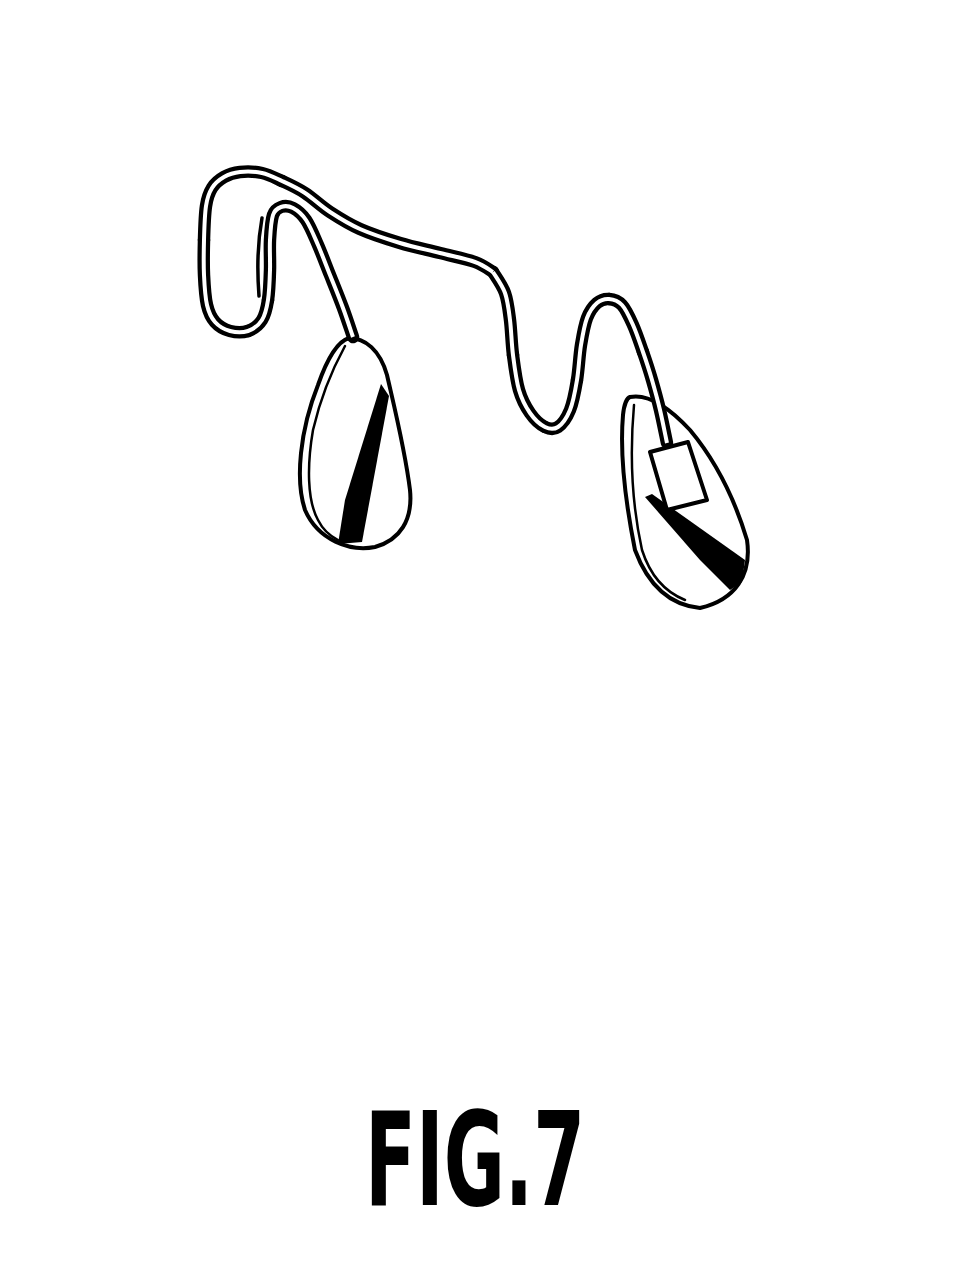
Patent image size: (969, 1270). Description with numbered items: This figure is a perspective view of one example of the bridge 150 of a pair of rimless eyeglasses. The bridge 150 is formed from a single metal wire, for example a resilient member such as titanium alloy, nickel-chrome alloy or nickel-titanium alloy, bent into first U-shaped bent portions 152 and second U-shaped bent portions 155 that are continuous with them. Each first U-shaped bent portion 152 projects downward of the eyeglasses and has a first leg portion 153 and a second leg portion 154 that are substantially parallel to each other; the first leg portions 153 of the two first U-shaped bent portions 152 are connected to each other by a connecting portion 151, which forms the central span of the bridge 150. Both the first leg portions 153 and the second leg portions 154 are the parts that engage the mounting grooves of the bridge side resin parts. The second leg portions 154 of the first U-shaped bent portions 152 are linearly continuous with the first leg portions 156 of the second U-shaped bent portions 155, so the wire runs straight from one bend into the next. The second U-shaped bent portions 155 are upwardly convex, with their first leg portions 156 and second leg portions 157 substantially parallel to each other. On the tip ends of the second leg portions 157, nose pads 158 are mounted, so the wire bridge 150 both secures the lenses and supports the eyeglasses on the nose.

The bridge 150 is at (467, 345).
The connecting portion 151 is at (387, 165).
The first U-shaped bent portions 152 is at (333, 448).
The first leg portions 153 is at (292, 273).
The second leg portions 154 is at (434, 495).
The second U-shaped bent portions 155 is at (464, 176).
The first leg portions 156 is at (384, 206).
The second leg portions 157 is at (711, 367).
The nose pads 158 is at (579, 511).